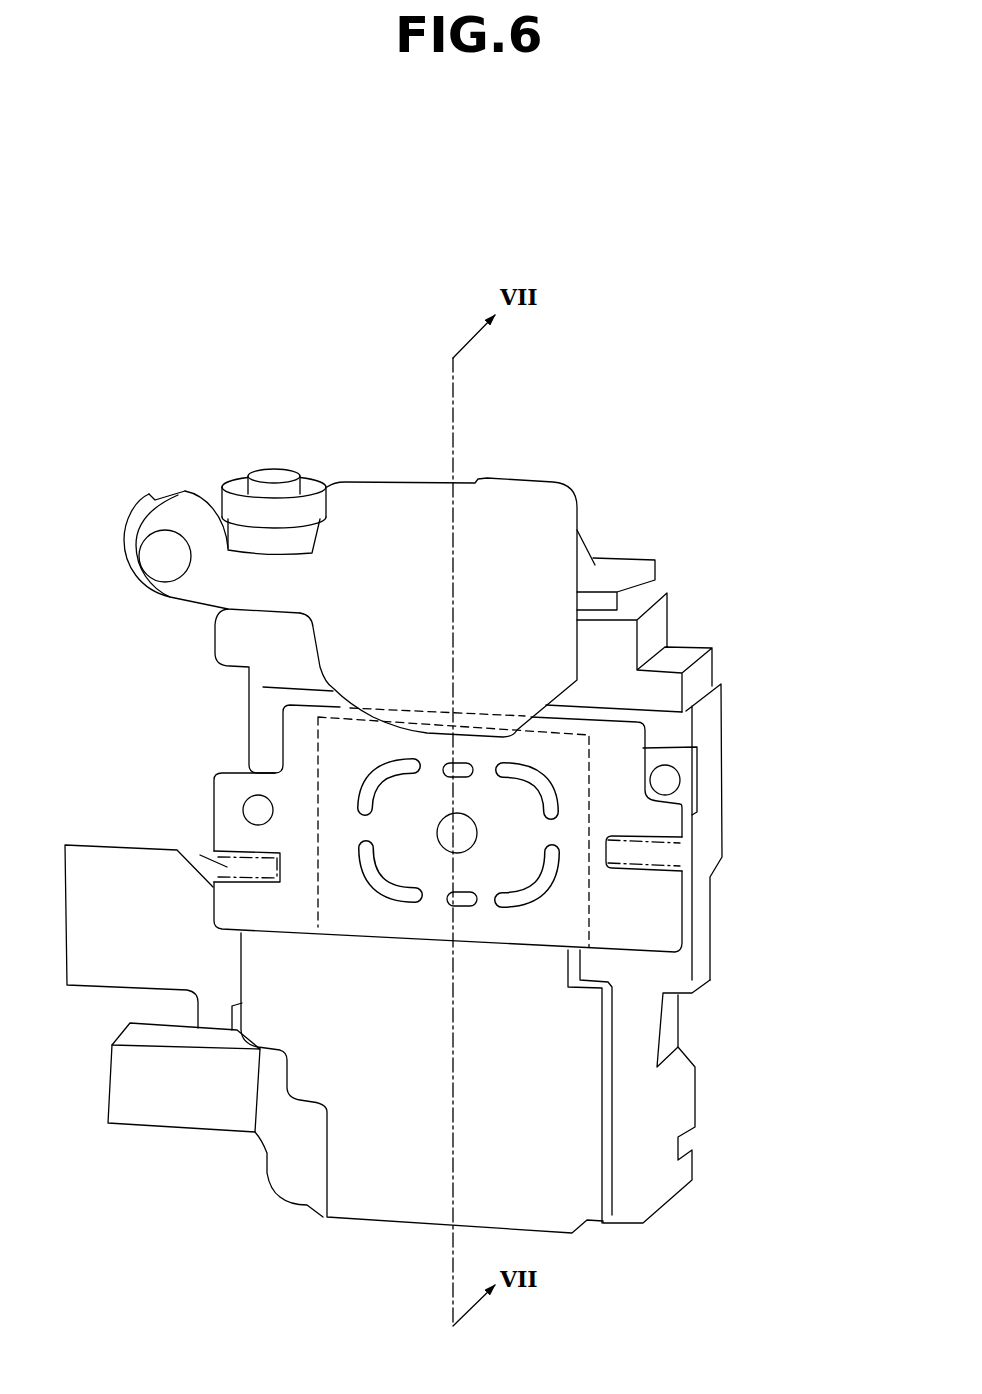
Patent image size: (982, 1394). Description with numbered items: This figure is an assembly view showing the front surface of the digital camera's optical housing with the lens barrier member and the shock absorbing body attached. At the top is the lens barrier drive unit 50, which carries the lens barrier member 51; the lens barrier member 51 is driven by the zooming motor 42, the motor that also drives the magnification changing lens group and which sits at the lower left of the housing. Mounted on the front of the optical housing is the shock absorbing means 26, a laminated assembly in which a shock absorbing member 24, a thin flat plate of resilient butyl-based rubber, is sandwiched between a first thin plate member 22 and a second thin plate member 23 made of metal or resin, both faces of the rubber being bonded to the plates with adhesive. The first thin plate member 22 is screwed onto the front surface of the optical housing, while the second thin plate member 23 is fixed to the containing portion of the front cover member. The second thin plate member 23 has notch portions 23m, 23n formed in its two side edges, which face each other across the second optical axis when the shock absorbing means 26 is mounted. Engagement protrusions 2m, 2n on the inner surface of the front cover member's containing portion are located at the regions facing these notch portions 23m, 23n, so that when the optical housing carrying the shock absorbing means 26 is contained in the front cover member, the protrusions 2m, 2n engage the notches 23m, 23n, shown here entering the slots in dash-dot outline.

The lens barrier drive unit 50 is at (243, 461).
The lens barrier member 51 is at (545, 514).
The second thin plate member 23 is at (617, 755).
The first thin plate member 22 is at (682, 765).
The shock absorbing member 24 is at (589, 816).
The notch portion 23m is at (686, 843).
The engagement protrusion 2m is at (668, 855).
The notch portion 23n is at (213, 849).
The engagement protrusion 2n is at (222, 860).
The shock absorbing means 26 is at (376, 953).
The zooming motor 42 is at (204, 1103).